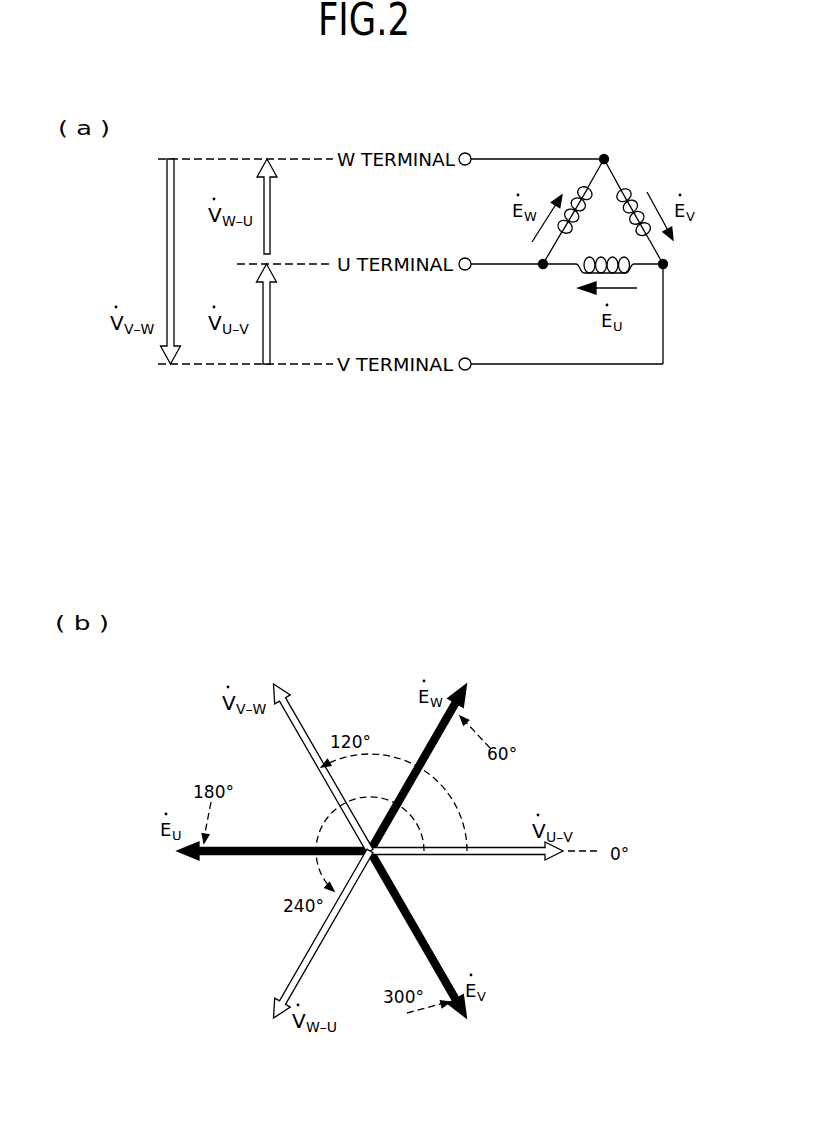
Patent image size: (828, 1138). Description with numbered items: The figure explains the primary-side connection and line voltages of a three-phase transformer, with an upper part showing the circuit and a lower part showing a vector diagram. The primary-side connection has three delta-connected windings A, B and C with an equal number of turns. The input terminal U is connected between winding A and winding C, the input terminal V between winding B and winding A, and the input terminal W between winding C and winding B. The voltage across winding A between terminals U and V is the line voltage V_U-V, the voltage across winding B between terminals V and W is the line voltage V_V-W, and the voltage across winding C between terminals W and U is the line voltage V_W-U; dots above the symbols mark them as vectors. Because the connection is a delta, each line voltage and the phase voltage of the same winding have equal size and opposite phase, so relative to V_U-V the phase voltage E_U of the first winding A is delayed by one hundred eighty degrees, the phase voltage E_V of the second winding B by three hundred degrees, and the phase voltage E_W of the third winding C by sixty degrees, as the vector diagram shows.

The winding A is at (578, 274).
The winding B is at (628, 188).
The winding C is at (575, 188).